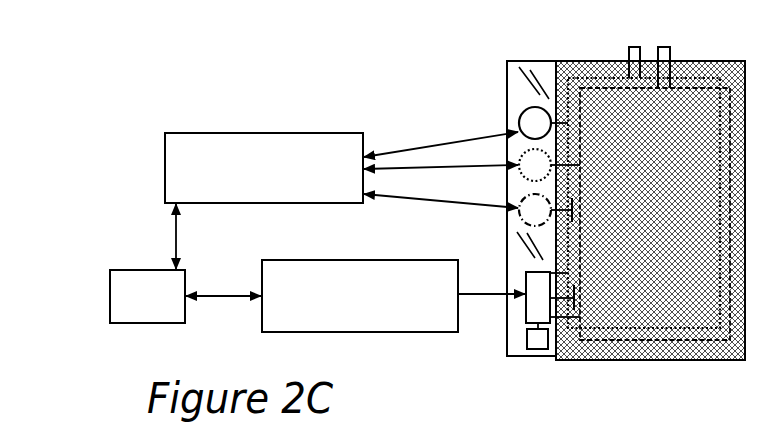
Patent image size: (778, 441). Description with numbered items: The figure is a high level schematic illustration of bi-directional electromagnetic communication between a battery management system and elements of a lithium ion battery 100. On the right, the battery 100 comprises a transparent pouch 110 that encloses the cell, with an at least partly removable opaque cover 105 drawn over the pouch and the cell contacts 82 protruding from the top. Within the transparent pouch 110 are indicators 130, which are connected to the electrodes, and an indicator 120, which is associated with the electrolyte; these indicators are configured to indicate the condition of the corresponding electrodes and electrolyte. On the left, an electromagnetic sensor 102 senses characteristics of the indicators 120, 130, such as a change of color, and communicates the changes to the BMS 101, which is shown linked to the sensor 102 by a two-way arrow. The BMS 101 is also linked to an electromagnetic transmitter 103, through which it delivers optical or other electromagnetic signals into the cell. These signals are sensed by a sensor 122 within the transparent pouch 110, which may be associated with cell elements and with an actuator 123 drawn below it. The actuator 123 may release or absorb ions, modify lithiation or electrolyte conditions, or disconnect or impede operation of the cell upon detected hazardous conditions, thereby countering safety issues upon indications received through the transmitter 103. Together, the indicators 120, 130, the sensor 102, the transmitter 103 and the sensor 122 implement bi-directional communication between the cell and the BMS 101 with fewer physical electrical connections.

The lithium ion battery 100 is at (284, 52).
The battery management system 101 is at (110, 290).
The electromagnetic sensor 102 is at (165, 167).
The electromagnetic transmitter 103 is at (278, 320).
The opaque cover 105 is at (587, 68).
The transparent pouch 110 is at (507, 70).
The indicator 120 is at (520, 218).
The sensor 122 is at (523, 312).
The actuator 123 is at (527, 347).
The indicator 130 is at (519, 116).
The contacts 82 is at (658, 47).